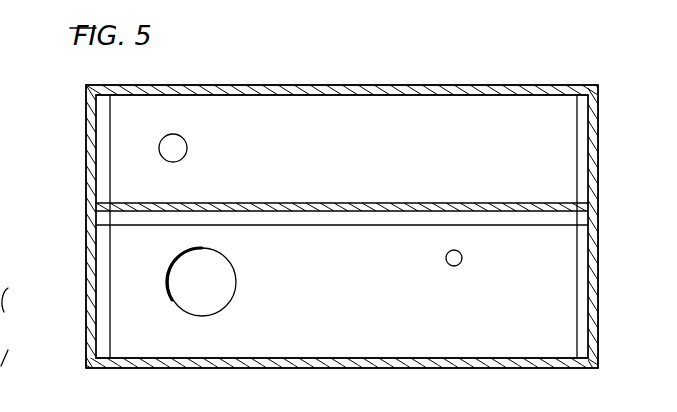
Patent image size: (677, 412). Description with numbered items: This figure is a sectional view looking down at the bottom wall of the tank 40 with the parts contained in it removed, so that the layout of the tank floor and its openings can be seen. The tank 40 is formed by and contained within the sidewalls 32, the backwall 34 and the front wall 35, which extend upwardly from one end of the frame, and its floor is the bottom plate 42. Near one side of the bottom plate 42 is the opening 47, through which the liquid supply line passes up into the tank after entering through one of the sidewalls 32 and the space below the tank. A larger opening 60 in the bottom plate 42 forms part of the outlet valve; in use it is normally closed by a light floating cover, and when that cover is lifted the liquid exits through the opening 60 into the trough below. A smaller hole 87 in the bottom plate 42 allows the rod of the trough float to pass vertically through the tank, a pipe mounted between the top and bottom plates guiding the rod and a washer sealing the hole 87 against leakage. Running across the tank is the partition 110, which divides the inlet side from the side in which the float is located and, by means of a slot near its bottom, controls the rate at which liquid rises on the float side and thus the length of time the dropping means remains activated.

The tank 40 is at (520, 117).
The front wall 35 is at (387, 85).
The backwall 34 is at (518, 368).
The sidewalls 32 is at (86, 210).
The partition 110 is at (395, 203).
The opening 47 is at (180, 140).
The opening 60 is at (198, 305).
The hole 87 is at (458, 265).
The bottom plate 42 is at (415, 306).